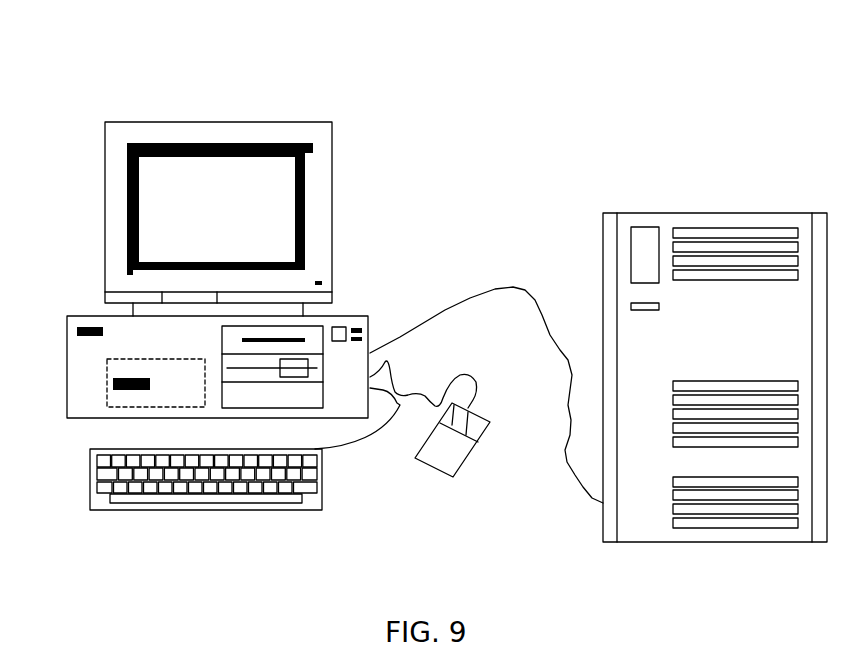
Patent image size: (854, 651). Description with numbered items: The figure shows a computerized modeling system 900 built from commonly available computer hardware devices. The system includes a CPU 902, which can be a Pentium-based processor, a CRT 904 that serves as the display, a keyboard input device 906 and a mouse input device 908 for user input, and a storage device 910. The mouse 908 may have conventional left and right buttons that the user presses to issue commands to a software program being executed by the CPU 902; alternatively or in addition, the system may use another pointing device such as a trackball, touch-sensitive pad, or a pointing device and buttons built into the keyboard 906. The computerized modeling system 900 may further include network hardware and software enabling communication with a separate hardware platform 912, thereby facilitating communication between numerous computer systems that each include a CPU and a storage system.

The computerized modeling system 900 is at (329, 86).
The CPU 902 is at (113, 383).
The CRT 904 is at (288, 203).
The keyboard input device 906 is at (90, 492).
The mouse input device 908 is at (447, 455).
The storage device 910 is at (302, 396).
The hardware platform 912 is at (657, 213).